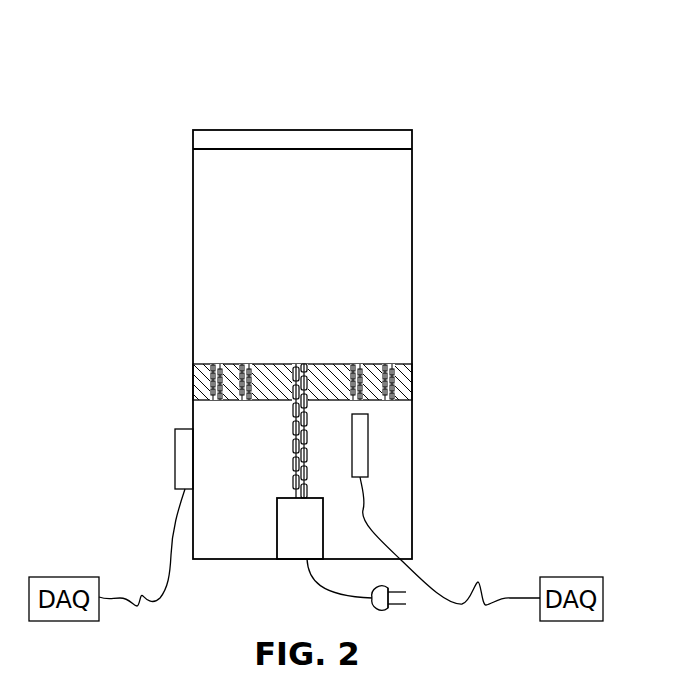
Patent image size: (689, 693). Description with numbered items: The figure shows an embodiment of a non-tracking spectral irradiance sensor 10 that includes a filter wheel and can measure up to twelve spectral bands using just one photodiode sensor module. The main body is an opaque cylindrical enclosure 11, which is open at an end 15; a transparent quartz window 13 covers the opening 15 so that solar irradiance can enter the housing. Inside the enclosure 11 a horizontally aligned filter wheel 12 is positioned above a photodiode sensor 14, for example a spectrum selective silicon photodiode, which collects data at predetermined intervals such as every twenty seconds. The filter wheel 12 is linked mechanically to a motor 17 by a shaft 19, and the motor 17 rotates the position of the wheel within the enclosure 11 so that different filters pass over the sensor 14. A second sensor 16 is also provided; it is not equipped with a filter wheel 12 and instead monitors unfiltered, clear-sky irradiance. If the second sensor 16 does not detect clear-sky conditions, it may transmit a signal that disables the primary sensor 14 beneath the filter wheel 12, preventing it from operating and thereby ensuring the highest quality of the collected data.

The non-tracking spectral irradiance sensor 10 is at (478, 230).
The opaque cylindrical enclosure 11 is at (193, 242).
The filter wheel 12 is at (412, 380).
The transparent quartz window 13 is at (378, 130).
The photodiode sensor 14 is at (368, 446).
The open end 15 is at (249, 114).
The second sensor 16 is at (180, 429).
The motor 17 is at (277, 524).
The shaft 19 is at (293, 464).